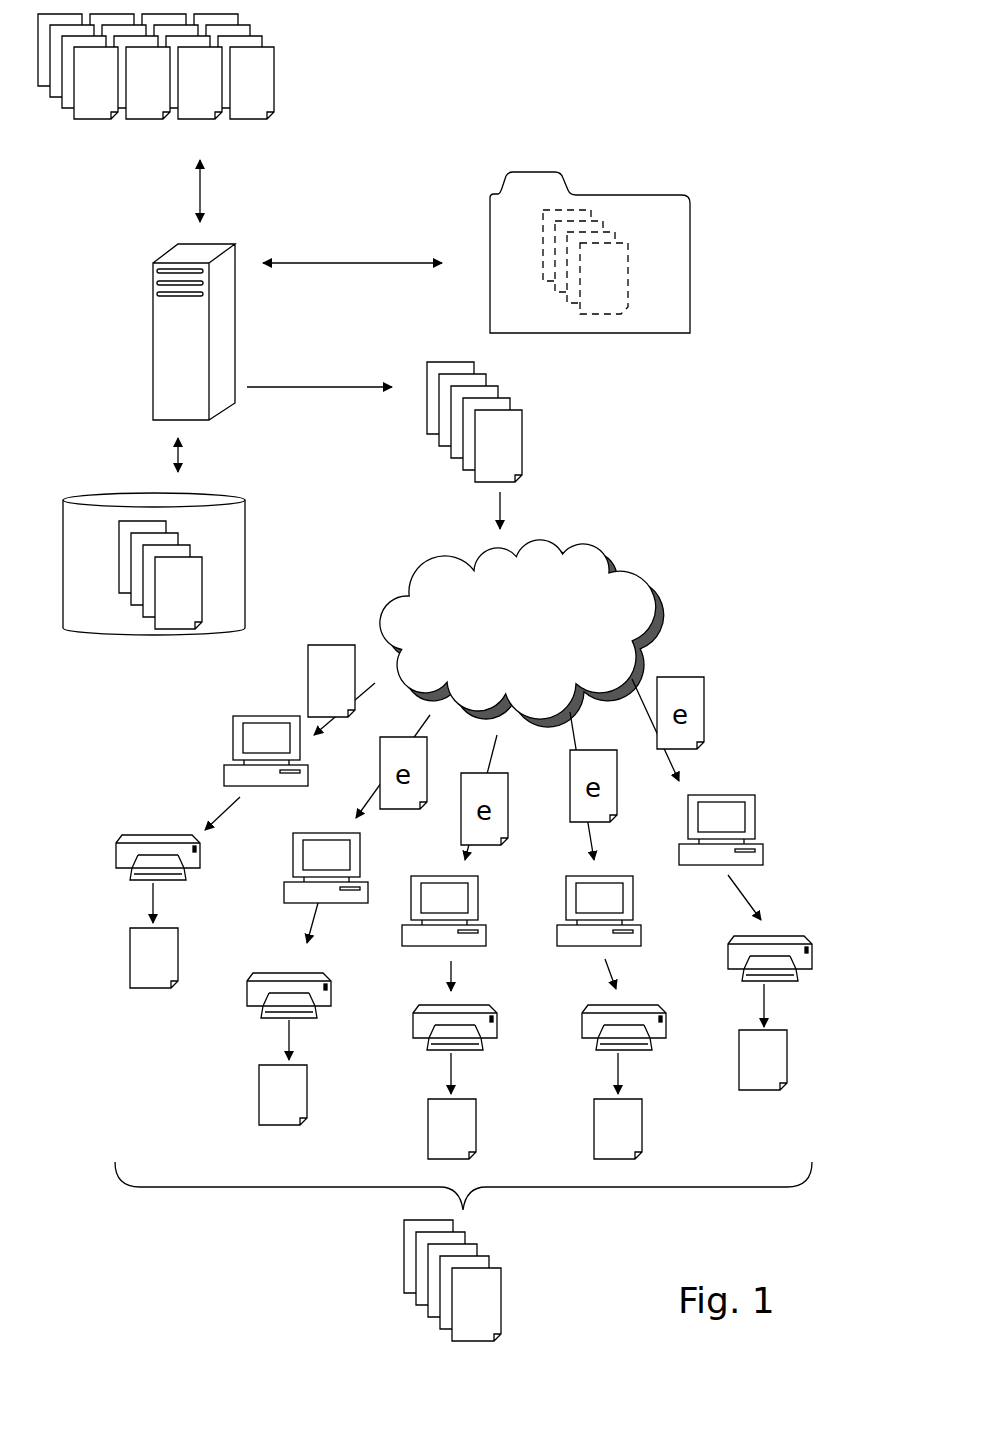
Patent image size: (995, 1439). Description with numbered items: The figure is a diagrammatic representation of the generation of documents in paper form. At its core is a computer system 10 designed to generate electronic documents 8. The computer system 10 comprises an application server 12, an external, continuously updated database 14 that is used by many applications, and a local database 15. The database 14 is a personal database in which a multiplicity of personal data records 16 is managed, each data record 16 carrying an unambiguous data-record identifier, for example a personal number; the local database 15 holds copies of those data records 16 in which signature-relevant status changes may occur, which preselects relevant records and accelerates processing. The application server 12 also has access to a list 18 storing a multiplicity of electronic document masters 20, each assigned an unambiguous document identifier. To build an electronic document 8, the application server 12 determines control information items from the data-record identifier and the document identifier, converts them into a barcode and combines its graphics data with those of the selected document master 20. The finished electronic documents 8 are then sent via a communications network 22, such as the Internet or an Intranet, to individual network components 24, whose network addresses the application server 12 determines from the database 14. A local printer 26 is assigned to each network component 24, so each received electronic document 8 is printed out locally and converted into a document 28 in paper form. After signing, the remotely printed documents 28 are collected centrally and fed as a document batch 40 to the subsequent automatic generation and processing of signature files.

The electronic document 8 is at (435, 438).
The computer system 10 is at (79, 196).
The application server 12 is at (180, 385).
The external database 14 is at (223, 68).
The local database 15 is at (215, 530).
The data record 16 is at (267, 108).
The list 18 is at (641, 298).
The document master 20 is at (620, 264).
The communications network 22 is at (608, 583).
The network component 24 is at (240, 740).
The local printer 26 is at (150, 838).
The paper document 28 is at (145, 958).
The document batch 40 is at (417, 1278).